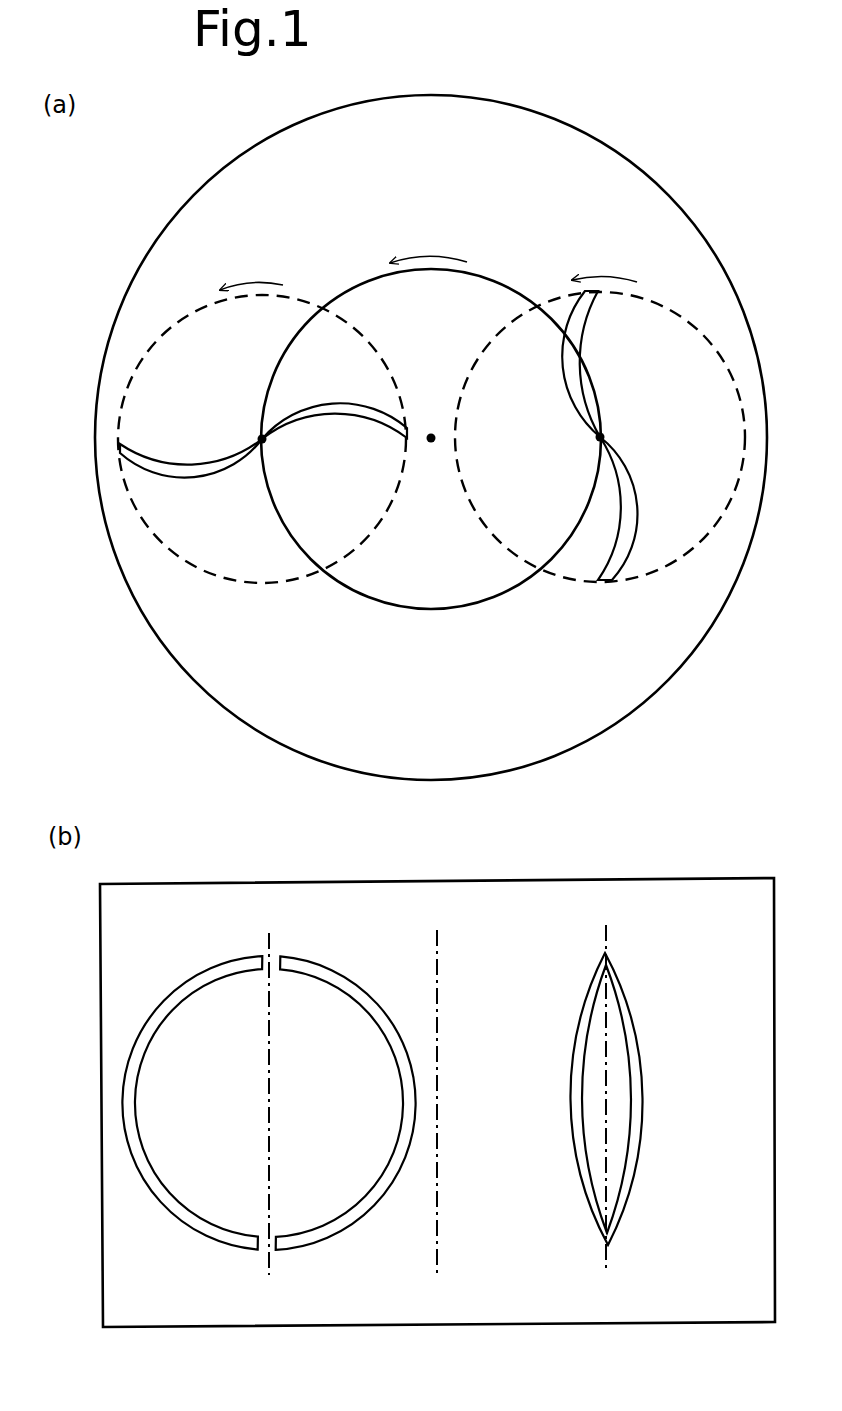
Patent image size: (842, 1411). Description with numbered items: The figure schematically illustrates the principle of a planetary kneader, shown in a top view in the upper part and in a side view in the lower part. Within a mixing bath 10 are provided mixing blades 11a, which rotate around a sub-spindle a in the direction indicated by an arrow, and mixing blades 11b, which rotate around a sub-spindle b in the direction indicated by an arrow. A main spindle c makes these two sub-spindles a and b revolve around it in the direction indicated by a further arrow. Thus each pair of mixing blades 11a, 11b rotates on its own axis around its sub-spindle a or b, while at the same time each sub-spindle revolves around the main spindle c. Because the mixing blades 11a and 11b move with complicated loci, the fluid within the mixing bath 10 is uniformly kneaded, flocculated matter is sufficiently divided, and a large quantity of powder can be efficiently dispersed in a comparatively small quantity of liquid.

The mixing bath 10 is at (197, 192).
The mixing blades 11a is at (569, 357).
The mixing blades 11b is at (348, 406).
The sub-spindle a is at (604, 438).
The sub-spindle b is at (258, 437).
The main spindle c is at (432, 430).